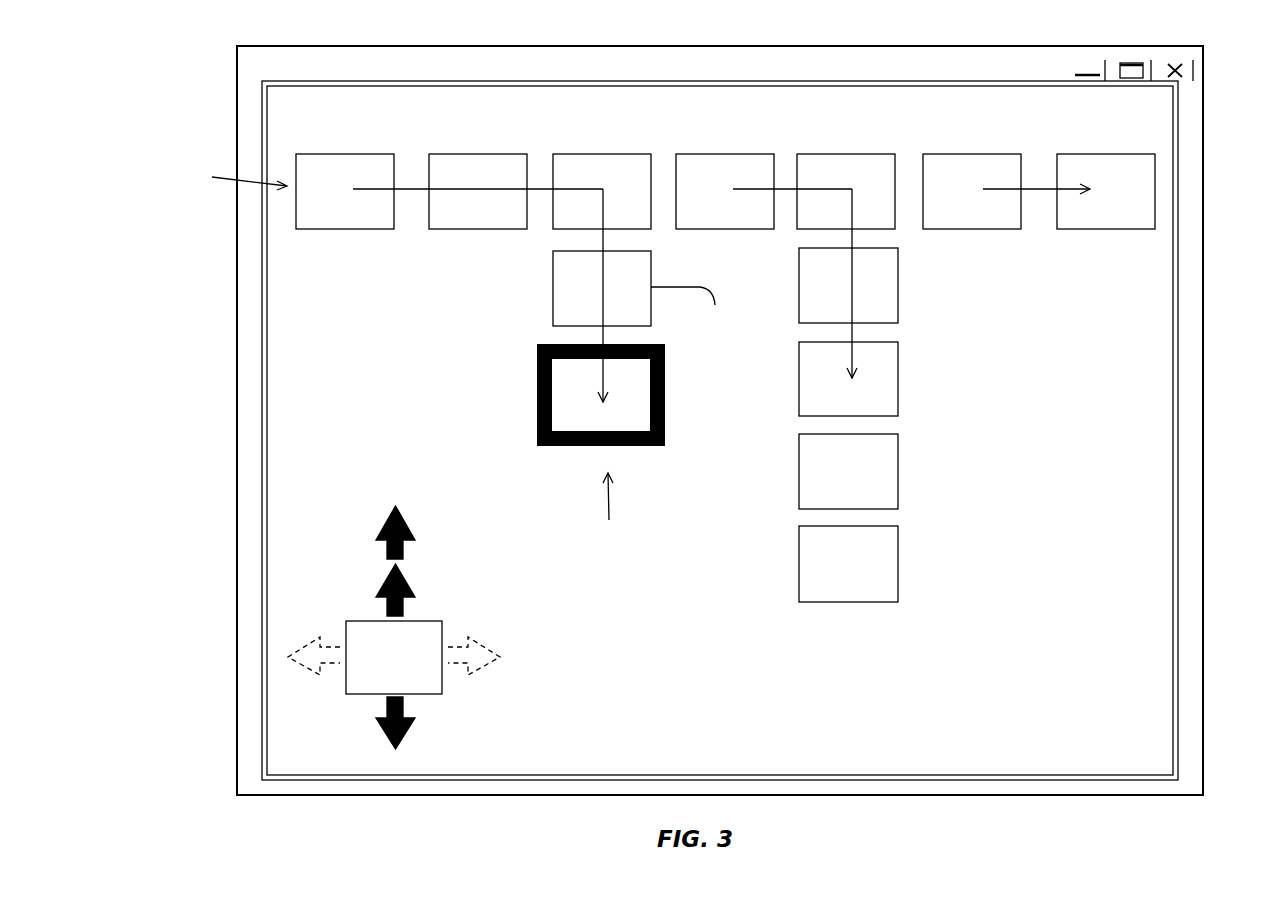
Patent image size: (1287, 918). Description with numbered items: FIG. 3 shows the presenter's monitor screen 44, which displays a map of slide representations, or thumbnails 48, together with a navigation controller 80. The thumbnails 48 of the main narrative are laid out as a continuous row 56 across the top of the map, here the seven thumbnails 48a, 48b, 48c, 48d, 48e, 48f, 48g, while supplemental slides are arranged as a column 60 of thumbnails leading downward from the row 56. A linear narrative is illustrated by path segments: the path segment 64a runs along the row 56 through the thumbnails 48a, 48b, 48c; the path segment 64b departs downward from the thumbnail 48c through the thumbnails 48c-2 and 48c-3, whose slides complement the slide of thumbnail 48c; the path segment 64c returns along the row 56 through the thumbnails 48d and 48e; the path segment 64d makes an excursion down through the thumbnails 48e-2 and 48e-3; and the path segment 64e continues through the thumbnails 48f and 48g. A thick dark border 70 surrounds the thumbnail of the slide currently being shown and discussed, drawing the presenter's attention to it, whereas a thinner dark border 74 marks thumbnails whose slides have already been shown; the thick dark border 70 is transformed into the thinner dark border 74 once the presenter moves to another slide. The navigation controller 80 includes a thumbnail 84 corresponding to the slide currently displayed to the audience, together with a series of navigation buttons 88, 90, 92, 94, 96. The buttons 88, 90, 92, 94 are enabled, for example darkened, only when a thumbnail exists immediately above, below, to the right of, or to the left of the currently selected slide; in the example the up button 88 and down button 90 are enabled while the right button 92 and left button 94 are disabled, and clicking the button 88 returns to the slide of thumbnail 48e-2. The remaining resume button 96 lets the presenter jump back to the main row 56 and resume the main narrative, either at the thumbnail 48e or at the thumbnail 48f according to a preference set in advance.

The monitor screen 44 is at (612, 46).
The thumbnails 48 is at (817, 560).
The thumbnail 48a is at (315, 153).
The thumbnail 48b is at (448, 153).
The thumbnail 48c is at (572, 153).
The thumbnail 48d is at (695, 153).
The thumbnail 48e is at (816, 153).
The thumbnail 48f is at (942, 153).
The thumbnail 48g is at (1076, 153).
The thumbnail 48c-2 is at (553, 270).
The thumbnail 48c-3 is at (562, 369).
The thumbnail 48e-2 is at (882, 282).
The thumbnail 48e-3 is at (877, 386).
The row 56 is at (228, 176).
The column 60 is at (609, 515).
The path segment 64a is at (412, 190).
The path segment 64b is at (612, 332).
The path segment 64c is at (785, 192).
The path segment 64d is at (854, 336).
The path segment 64e is at (1041, 193).
The thick dark border 70 is at (537, 421).
The thinner dark border 74 is at (691, 310).
The navigation controller 80 is at (365, 679).
The thumbnail 84 is at (425, 670).
The navigation button 88 is at (405, 581).
The navigation button 90 is at (377, 710).
The navigation button 92 is at (490, 647).
The navigation button 94 is at (297, 648).
The resume button 96 is at (383, 522).